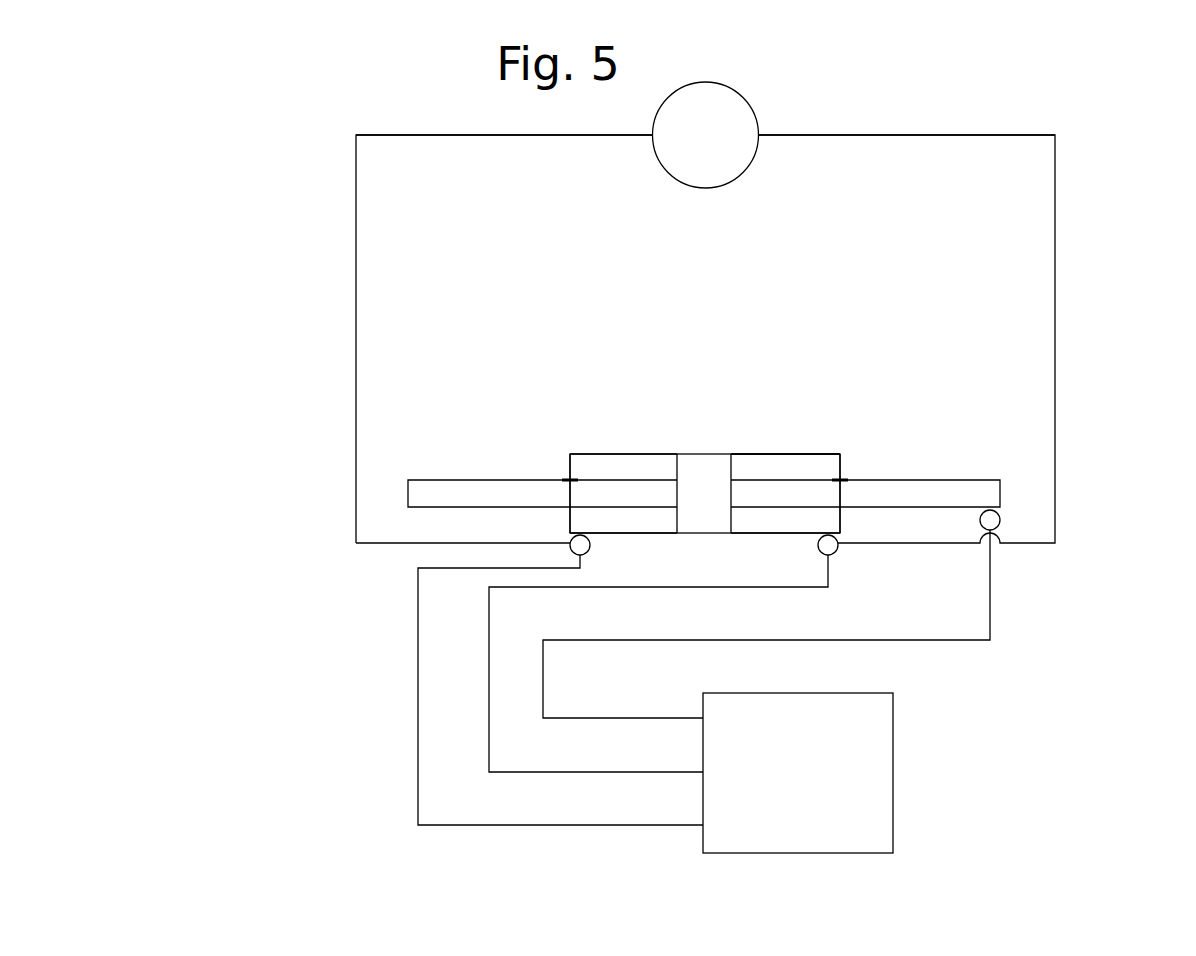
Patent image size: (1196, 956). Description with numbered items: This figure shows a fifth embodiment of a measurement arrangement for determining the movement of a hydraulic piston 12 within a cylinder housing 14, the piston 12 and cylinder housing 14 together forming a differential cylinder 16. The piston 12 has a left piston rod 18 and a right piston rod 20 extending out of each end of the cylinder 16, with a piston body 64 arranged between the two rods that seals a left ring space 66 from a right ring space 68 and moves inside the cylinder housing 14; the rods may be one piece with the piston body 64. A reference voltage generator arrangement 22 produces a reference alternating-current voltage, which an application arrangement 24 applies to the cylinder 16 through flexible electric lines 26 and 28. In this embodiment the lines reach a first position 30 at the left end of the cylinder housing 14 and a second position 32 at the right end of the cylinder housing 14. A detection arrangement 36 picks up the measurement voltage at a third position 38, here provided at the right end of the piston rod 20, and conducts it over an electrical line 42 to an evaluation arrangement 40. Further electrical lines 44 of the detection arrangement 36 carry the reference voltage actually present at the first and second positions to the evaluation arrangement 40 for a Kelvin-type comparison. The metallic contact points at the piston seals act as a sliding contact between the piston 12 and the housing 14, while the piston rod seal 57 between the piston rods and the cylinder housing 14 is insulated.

The piston 12 is at (640, 495).
The cylinder housing 14 is at (812, 455).
The cylinder 16 is at (650, 445).
The piston rod 18 is at (490, 493).
The piston rod 20 is at (932, 497).
The reference voltage generator arrangement 22 is at (732, 88).
The application arrangement 24 is at (312, 312).
The electric line 26 is at (418, 134).
The electric line 28 is at (933, 135).
The first position 30 is at (591, 547).
The second position 32 is at (838, 549).
The detection arrangement 36 is at (420, 686).
The third position 38 is at (979, 522).
The evaluation arrangement 40 is at (778, 786).
The electrical line 42 is at (932, 644).
The electrical lines 44 is at (418, 632).
The piston rod seal 57 is at (567, 478).
The piston body 64 is at (700, 512).
The left ring space 66 is at (620, 465).
The right ring space 68 is at (785, 465).